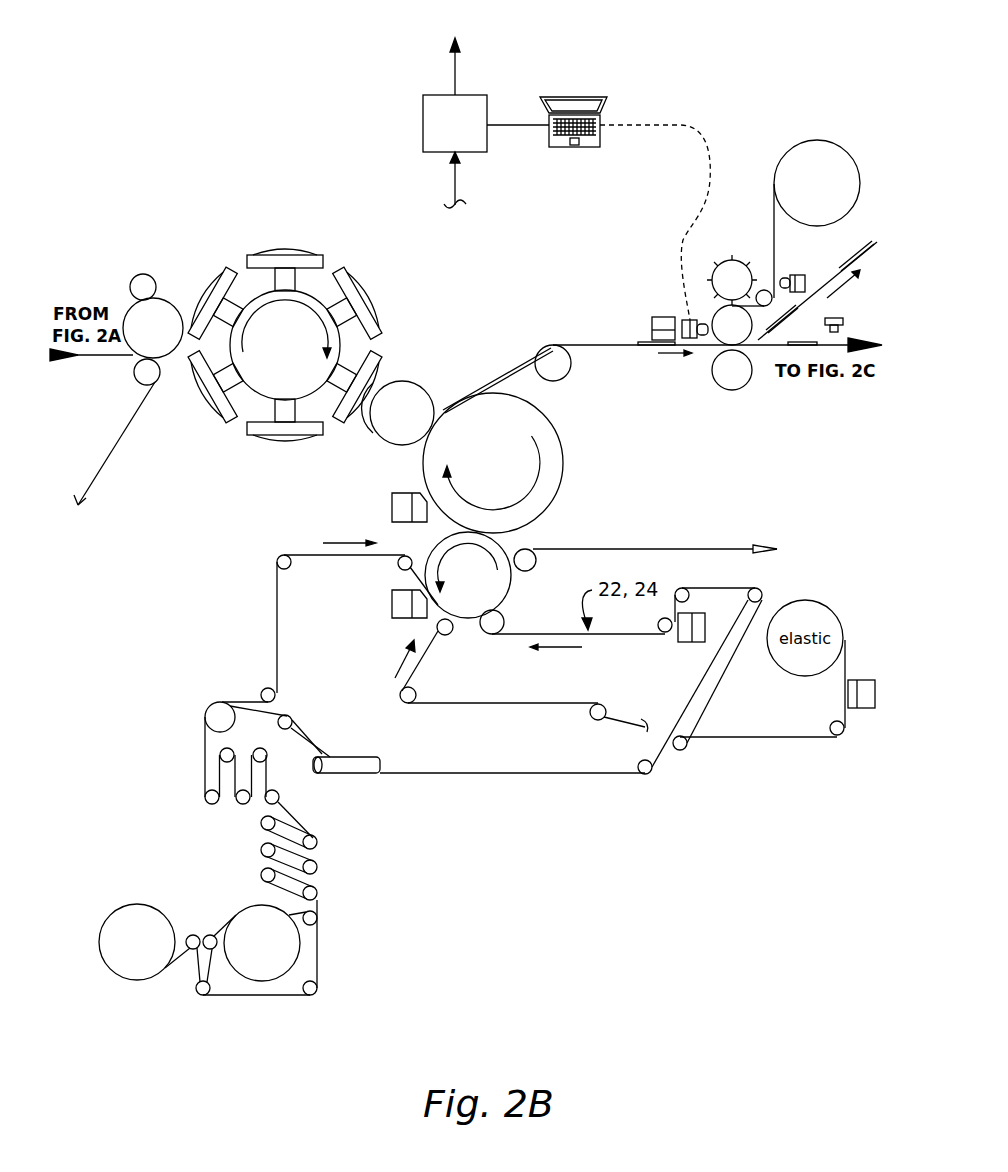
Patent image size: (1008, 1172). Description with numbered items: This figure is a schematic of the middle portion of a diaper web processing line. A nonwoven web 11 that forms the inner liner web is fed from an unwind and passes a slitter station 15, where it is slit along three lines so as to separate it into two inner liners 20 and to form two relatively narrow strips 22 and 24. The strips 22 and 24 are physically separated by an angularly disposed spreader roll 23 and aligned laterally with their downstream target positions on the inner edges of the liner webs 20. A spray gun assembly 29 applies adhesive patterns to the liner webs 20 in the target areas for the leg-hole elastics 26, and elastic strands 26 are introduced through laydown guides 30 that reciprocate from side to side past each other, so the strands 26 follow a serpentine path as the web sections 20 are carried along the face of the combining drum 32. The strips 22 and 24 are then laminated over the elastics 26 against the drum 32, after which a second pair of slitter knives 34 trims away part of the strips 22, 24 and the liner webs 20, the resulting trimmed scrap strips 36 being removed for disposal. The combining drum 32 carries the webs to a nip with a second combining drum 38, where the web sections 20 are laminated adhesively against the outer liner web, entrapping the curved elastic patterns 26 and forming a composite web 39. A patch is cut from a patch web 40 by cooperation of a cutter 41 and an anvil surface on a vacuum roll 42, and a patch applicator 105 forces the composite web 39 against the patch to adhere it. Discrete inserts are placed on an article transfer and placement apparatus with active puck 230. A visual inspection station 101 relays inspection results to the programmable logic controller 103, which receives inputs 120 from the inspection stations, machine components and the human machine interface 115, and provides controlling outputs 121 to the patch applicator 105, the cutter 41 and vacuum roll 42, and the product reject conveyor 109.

The nonwoven web 11 is at (326, 952).
The slitter station 15 is at (217, 712).
The inner liners 20 is at (268, 613).
The strip 22 is at (330, 740).
The spreader roll 23 is at (352, 774).
The strip 24 is at (303, 746).
The leg-hole elastics 26 is at (549, 715).
The spray gun assembly 29 is at (652, 322).
The laydown guides 30 is at (866, 710).
The combining drum 32 is at (468, 575).
The slitter knives 34 is at (532, 567).
The trimmed scrap strips 36 is at (679, 542).
The second combining drum 38 is at (493, 463).
The composite web 39 is at (522, 380).
The patch web 40 is at (766, 212).
The cutter 41 is at (726, 262).
The vacuum roll 42 is at (716, 322).
The visual inspection station 101 is at (683, 320).
The programmable logic controller 103 is at (455, 123).
The patch applicator 105 is at (712, 370).
The product reject conveyor 109 is at (884, 258).
The human machine interface 115 is at (583, 104).
The inputs 120 is at (457, 196).
The controlling outputs 121 is at (457, 74).
The article transfer and placement apparatus with active puck 230 is at (270, 228).